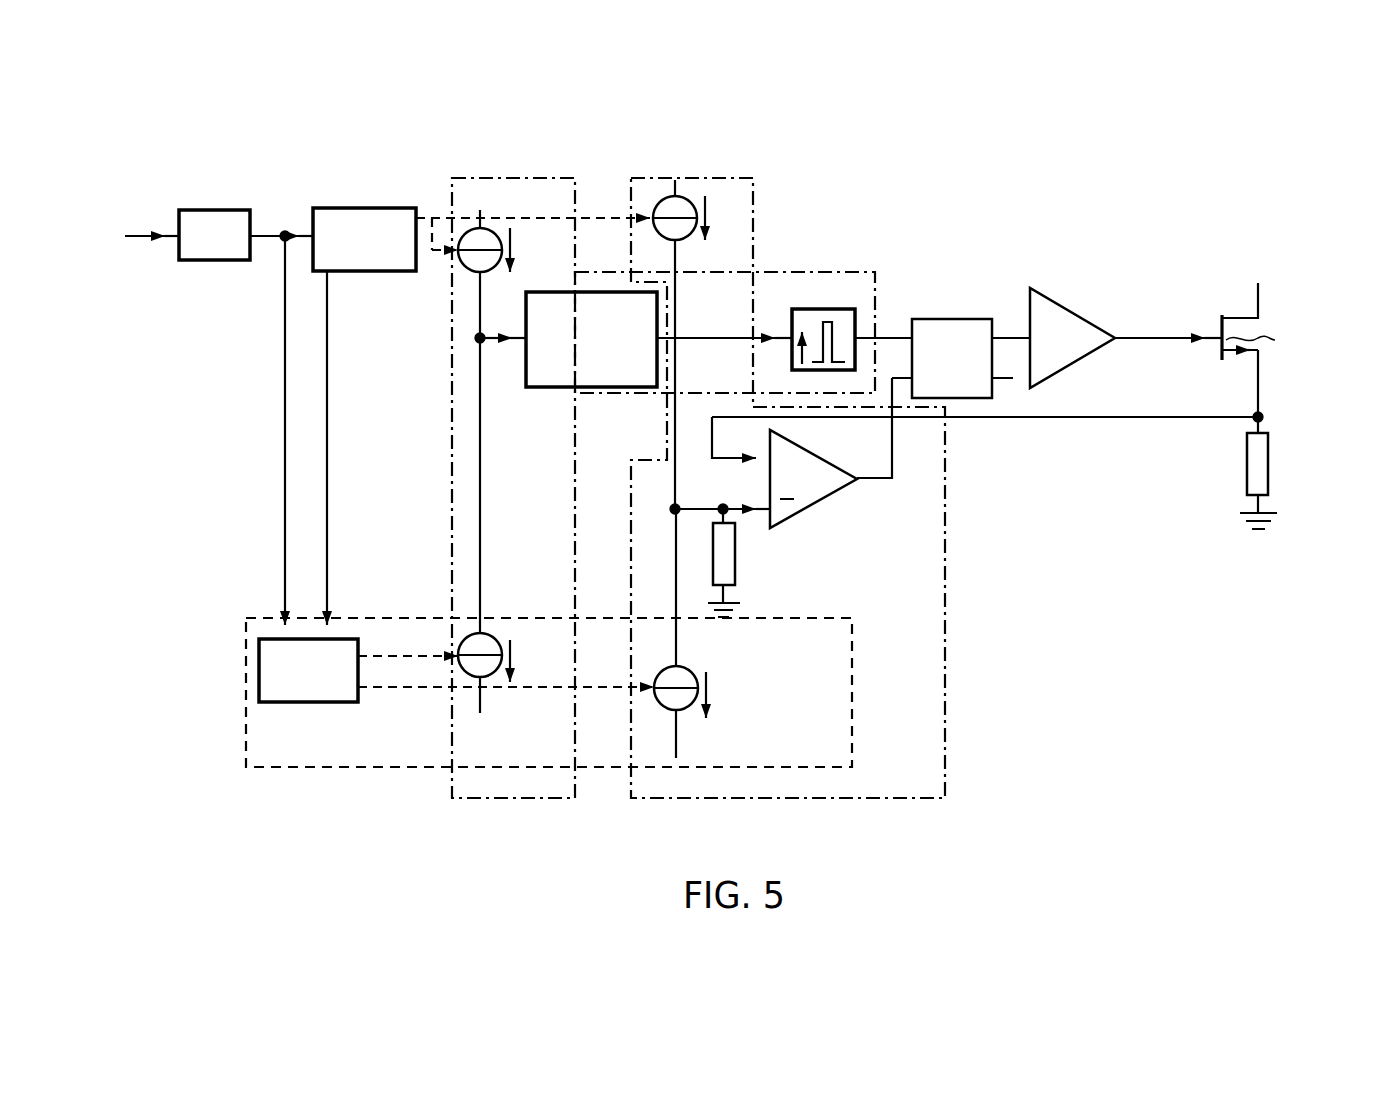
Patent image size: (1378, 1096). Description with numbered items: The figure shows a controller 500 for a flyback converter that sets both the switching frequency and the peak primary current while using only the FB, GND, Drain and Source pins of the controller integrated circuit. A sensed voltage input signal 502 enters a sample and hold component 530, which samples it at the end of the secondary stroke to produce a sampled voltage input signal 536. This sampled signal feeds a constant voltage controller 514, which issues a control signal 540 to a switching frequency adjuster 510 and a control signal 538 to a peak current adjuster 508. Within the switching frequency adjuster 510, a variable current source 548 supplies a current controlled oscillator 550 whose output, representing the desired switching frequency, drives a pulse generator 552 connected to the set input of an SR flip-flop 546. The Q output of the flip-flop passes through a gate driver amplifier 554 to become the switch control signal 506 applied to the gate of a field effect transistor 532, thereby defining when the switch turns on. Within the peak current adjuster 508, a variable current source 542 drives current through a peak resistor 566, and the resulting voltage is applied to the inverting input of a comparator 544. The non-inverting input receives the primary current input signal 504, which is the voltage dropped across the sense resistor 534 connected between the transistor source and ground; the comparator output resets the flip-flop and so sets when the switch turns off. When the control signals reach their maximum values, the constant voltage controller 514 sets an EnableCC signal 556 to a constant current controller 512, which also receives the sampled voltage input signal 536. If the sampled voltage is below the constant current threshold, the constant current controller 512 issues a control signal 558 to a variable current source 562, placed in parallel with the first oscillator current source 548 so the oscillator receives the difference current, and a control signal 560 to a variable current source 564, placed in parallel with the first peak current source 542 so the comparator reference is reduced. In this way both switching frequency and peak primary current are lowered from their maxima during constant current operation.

The controller 500 is at (1247, 205).
The VFB input signal 502 is at (142, 238).
The Vprimary input signal 504 is at (1075, 420).
The switch control signal 506 is at (1120, 342).
The peak current adjuster 508 is at (947, 798).
The switching frequency adjuster 510 is at (508, 178).
The constant current (CC) controller 512 is at (259, 667).
The constant voltage (CV) controller 514 is at (340, 208).
The sample and hold component 530 is at (212, 210).
The field effect transistor 532 is at (1263, 352).
The Rsense resistor 534 is at (1268, 488).
The sampled voltage input signal VFBS 536 is at (272, 247).
The control signal to peak current adjuster 538 is at (607, 215).
The control signal to switching frequency adjuster 540 is at (432, 218).
The variable current source IpeakCV 542 is at (690, 198).
The comparator 544 is at (818, 452).
The SR flip-flop 546 is at (955, 319).
The variable current source IoscCV 548 is at (471, 272).
The current controlled oscillator 550 is at (548, 388).
The pulse generator 552 is at (850, 309).
The gate driver amplifier 554 is at (1093, 322).
The EnableCC signal 556 is at (327, 562).
The control signal to switching frequency adjuster from CC controller 558 is at (375, 618).
The control signal to peak current adjuster from CC controller 560 is at (617, 688).
The variable current source IsuboscCC 562 is at (487, 633).
The variable current source IsubpeakCC 564 is at (692, 671).
The peak resistor Rpeak 566 is at (735, 580).